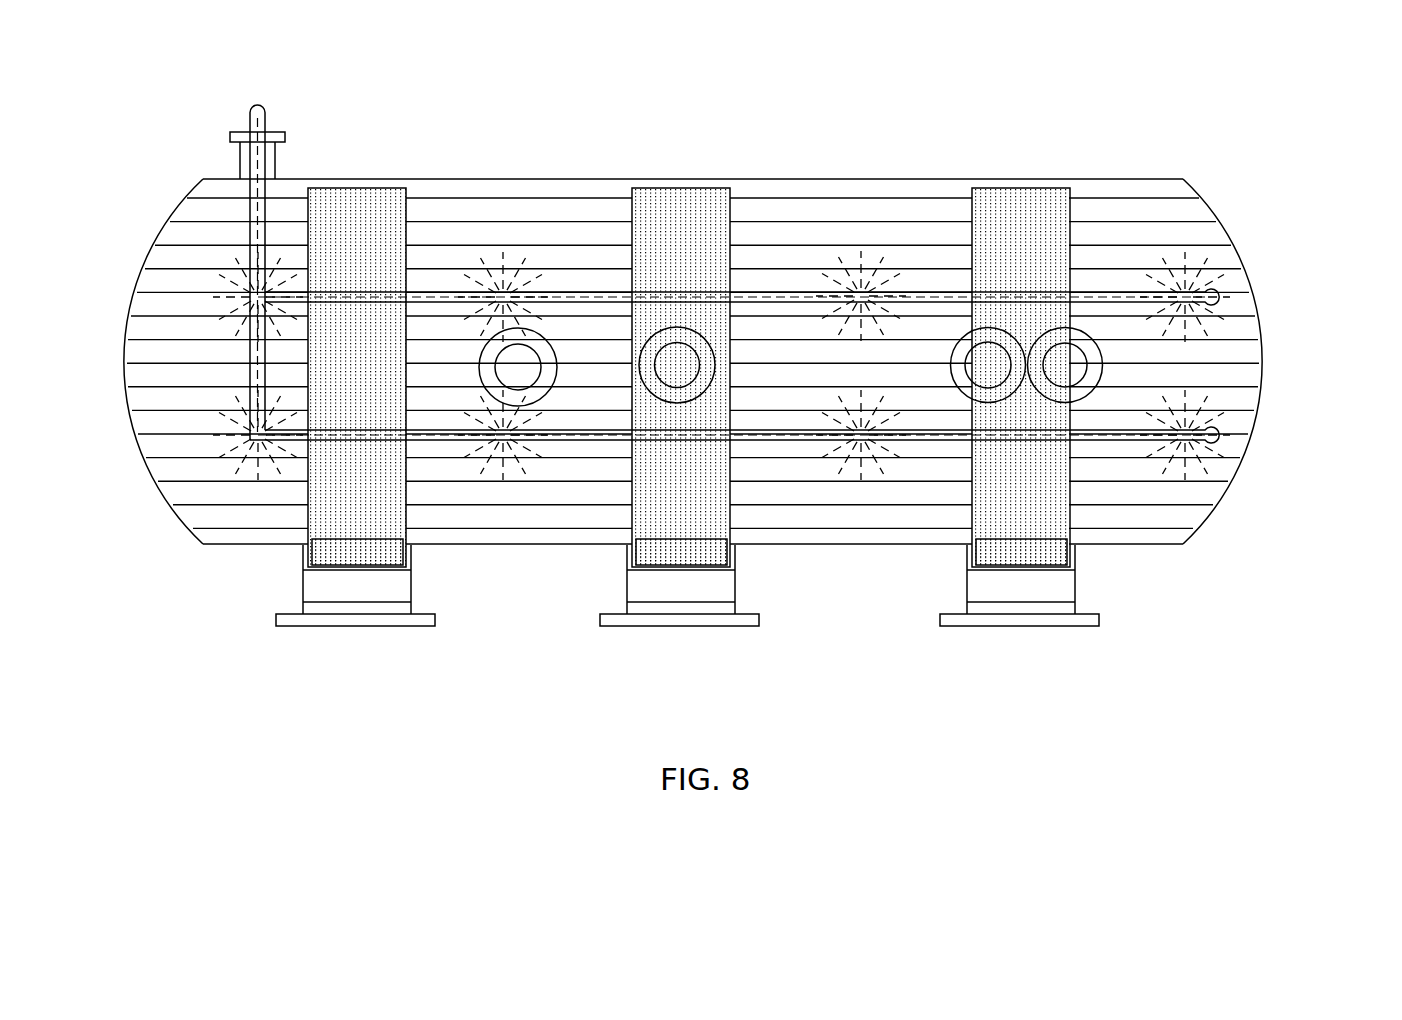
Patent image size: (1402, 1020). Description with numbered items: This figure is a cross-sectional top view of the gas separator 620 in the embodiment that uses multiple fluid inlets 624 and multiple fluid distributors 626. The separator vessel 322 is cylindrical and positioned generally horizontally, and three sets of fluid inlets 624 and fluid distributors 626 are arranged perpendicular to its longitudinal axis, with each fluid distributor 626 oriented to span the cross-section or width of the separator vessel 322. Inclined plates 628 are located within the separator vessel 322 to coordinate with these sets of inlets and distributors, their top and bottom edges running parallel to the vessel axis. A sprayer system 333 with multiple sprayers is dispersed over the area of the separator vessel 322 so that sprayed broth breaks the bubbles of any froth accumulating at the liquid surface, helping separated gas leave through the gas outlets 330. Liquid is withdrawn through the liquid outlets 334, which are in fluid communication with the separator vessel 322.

The gas separator 620 is at (1242, 187).
The separator vessel 322 is at (122, 423).
The inclined plates 628 is at (1203, 507).
The sprayer system 333 is at (285, 137).
The gas outlet 330 is at (553, 340).
The liquid outlet 334 is at (702, 332).
The fluid distributor 626 is at (395, 490).
The fluid inlet 624 is at (418, 625).